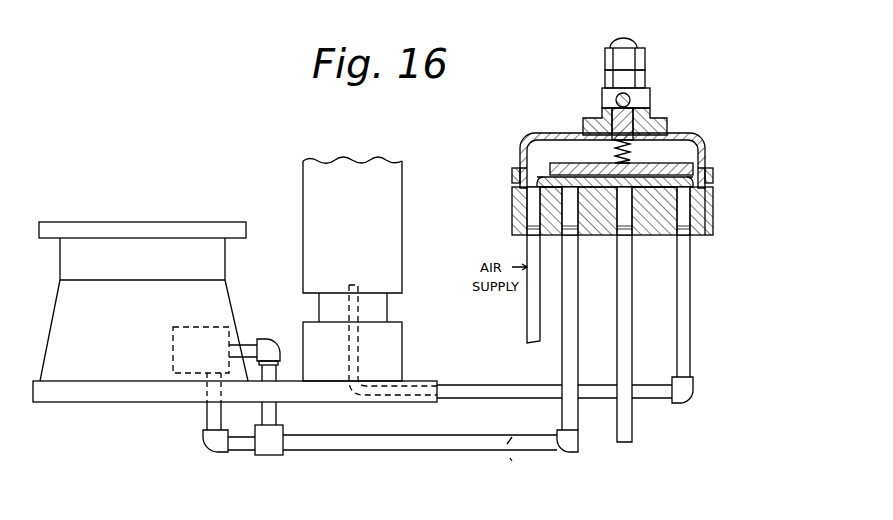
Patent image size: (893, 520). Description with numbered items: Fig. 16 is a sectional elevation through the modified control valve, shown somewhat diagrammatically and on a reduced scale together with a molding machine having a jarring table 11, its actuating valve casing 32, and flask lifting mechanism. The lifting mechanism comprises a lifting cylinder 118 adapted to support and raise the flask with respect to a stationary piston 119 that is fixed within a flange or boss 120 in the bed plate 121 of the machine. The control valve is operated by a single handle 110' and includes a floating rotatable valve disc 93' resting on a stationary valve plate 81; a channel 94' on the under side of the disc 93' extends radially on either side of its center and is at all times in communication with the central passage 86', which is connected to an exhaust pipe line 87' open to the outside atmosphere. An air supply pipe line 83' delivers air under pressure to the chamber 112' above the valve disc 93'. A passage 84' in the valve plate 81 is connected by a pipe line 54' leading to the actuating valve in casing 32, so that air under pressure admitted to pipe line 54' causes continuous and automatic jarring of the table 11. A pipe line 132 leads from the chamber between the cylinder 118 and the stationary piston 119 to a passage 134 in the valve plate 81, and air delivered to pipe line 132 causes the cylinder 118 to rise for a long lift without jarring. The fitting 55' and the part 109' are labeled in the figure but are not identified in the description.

The jarring table 11 is at (136, 222).
The actuating valve casing 32 is at (173, 343).
The elbow fitting 55' is at (254, 359).
The bed plate 121 is at (138, 394).
The lifting cylinder 118 is at (385, 188).
The stationary piston 119 is at (373, 307).
The flange or boss 120 is at (388, 348).
The chamber 112' is at (604, 140).
The cap flange 109' is at (630, 146).
The floating rotatable valve disc 93' is at (655, 162).
The central passage 86' is at (648, 190).
The channel 94' is at (592, 119).
The handle 110' is at (656, 93).
The valve plate 81 is at (706, 216).
The passage 84' is at (567, 207).
The passage 134 is at (714, 231).
The air supply pipe line 83' is at (510, 289).
The pipe line 54' is at (554, 343).
The exhaust pipe line 87' is at (645, 338).
The pipe line 132 is at (682, 338).